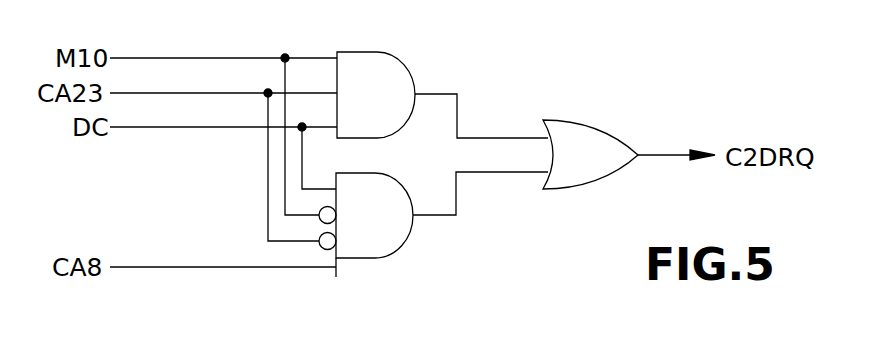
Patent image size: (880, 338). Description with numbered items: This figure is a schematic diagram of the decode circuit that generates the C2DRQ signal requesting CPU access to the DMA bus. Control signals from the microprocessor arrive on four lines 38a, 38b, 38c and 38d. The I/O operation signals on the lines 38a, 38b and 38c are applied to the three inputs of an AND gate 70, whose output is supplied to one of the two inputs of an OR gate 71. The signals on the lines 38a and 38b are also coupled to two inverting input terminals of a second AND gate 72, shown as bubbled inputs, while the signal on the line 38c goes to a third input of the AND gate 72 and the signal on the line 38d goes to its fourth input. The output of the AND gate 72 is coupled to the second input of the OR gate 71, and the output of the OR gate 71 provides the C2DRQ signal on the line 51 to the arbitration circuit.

The line 38a is at (233, 57).
The line 38b is at (236, 96).
The line 38c is at (168, 128).
The line 38d is at (210, 267).
The AND gate 70 is at (392, 70).
The OR gate 71 is at (590, 122).
The AND gate 72 is at (403, 236).
The line 51 is at (665, 156).